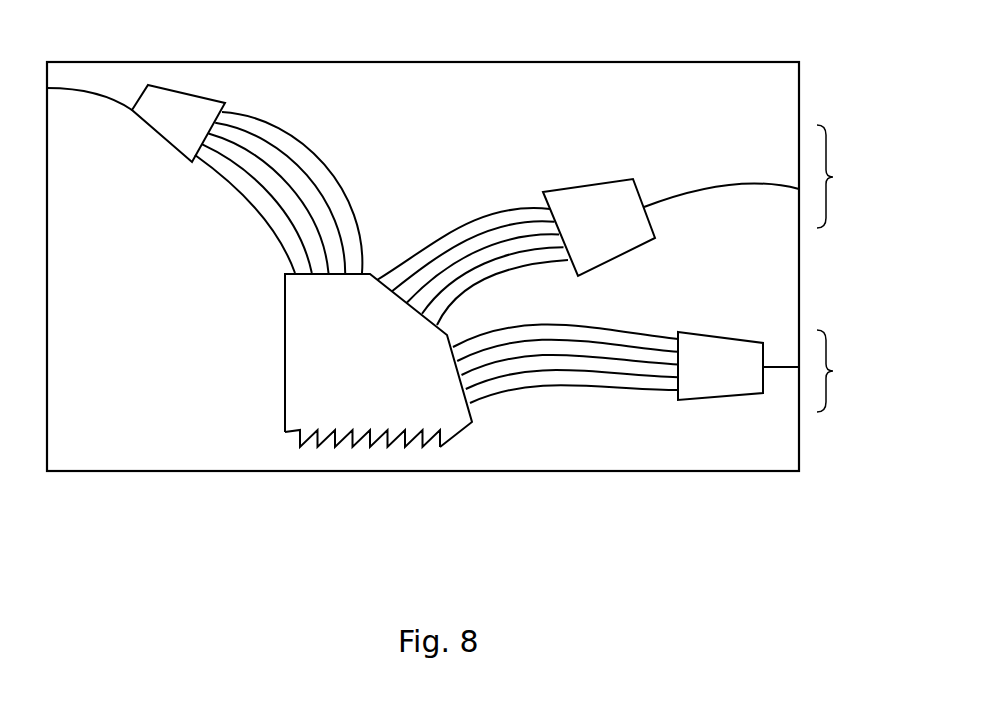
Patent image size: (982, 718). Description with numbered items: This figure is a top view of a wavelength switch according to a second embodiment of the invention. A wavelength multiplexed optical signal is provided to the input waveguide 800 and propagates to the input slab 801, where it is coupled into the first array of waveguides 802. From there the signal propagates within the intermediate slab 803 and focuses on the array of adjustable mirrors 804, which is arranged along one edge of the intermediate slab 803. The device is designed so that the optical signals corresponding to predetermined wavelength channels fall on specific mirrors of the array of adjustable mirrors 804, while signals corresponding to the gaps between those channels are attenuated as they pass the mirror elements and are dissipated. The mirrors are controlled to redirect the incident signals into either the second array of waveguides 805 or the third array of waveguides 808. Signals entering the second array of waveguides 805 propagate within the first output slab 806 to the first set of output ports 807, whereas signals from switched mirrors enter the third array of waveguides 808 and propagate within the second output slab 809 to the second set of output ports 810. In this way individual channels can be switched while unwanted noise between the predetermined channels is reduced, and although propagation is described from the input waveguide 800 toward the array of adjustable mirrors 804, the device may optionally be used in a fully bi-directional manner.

The input waveguide 800 is at (77, 85).
The input slab 801 is at (200, 96).
The first array of waveguides 802 is at (320, 160).
The intermediate slab 803 is at (285, 380).
The array of adjustable mirrors 804 is at (352, 432).
The second array of waveguides 805 is at (567, 385).
The first output slab 806 is at (722, 398).
The first set of output ports 807 is at (851, 371).
The third array of waveguides 808 is at (463, 222).
The second output slab 809 is at (587, 185).
The second set of output ports 810 is at (851, 176).